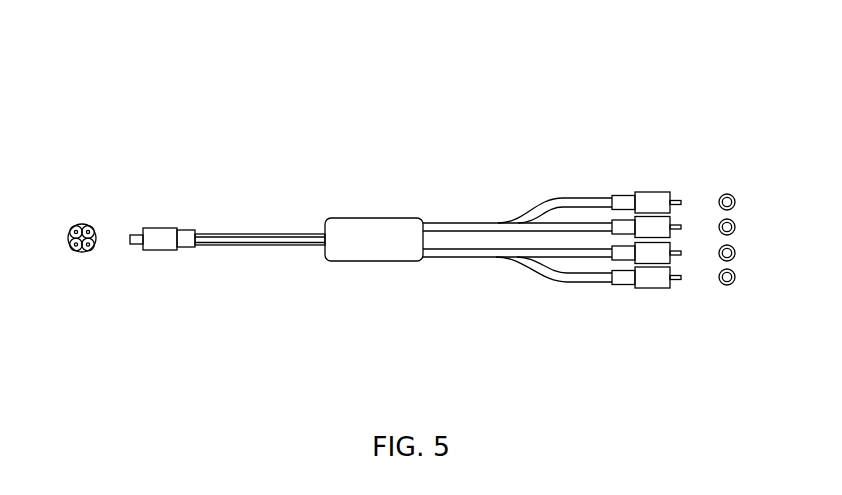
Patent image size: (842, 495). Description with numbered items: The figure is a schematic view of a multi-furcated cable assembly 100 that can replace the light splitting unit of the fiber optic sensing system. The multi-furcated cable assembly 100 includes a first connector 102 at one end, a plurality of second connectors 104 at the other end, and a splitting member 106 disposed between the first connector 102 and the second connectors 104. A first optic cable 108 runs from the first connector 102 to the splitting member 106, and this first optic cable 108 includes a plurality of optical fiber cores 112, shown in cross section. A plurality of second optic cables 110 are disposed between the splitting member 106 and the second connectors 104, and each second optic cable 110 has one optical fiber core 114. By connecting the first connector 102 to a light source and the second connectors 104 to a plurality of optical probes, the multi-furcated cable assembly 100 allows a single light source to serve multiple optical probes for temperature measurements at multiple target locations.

The multi-furcated cable assembly 100 is at (557, 90).
The first connector 102 is at (158, 228).
The second connectors 104 is at (652, 192).
The splitting member 106 is at (367, 218).
The first optic cable 108 is at (249, 233).
The second optic cables 110 is at (547, 222).
The optical fiber cores 112 is at (76, 224).
The optical fiber core 114 is at (735, 195).